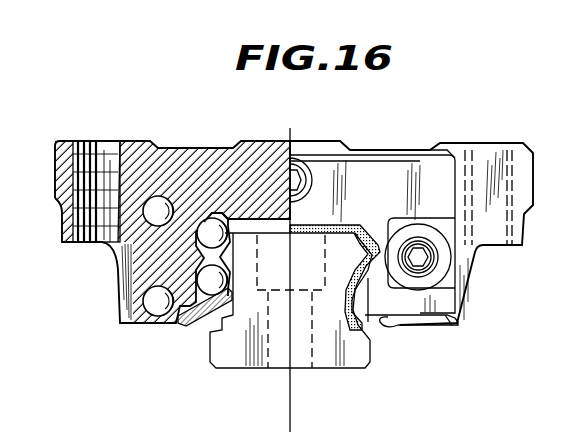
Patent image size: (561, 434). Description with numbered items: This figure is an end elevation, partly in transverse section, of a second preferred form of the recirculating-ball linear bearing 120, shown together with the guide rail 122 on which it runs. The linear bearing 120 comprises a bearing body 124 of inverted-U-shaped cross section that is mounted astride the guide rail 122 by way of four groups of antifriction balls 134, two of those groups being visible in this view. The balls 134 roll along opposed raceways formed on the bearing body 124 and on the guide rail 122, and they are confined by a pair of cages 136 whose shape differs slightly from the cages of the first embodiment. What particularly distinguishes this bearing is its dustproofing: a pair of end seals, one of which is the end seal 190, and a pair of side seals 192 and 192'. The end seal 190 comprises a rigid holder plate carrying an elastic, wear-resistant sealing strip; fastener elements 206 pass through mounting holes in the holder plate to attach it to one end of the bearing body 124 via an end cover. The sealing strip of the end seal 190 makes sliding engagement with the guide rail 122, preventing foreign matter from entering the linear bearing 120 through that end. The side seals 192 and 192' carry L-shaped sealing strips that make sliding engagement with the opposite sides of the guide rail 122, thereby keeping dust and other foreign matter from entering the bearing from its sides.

The linear bearing 120 is at (423, 137).
The guide rail 122 is at (234, 360).
The bearing body 124 is at (137, 153).
The antifriction balls 134 is at (160, 202).
The cages 136 is at (224, 214).
The end seal 190 is at (366, 280).
The side seal 192 is at (192, 346).
The side seal 192' is at (425, 355).
The fastener elements 206 is at (433, 253).